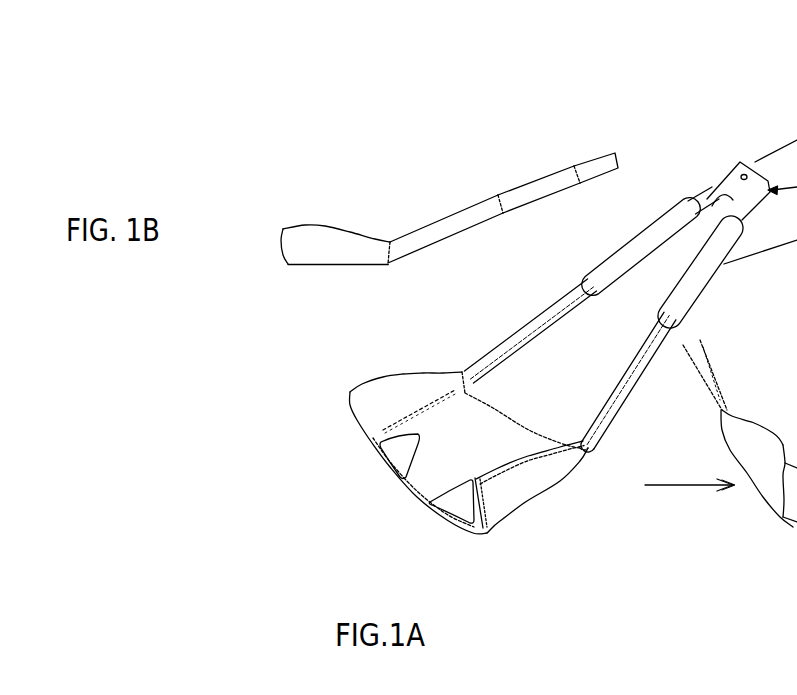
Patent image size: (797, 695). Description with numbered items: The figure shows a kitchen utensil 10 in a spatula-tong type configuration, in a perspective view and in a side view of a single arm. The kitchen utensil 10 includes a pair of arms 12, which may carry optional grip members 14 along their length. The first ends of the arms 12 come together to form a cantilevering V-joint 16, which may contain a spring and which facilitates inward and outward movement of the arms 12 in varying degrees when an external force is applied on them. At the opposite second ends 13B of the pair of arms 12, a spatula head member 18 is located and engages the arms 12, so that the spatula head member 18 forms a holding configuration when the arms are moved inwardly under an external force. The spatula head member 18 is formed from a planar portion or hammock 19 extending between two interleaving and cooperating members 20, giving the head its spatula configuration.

In FIG. 1B, the kitchen utensil 10 is at (100, 118).
In FIG. 1A, the arms 12 is at (635, 358).
In FIG. 1B, the arms 12 is at (453, 215).
In FIG. 1A, the second ends 13B is at (590, 449).
In FIG. 1B, the grip members 14 is at (543, 178).
In FIG. 1B, the cantilevering V-joint 16 is at (623, 157).
In FIG. 1A, the spatula head member 18 is at (368, 451).
In FIG. 1B, the spatula head member 18 is at (333, 218).
In FIG. 1A, the hammock 19 is at (398, 491).
In FIG. 1A, the interleaving and cooperating members 20 is at (528, 493).